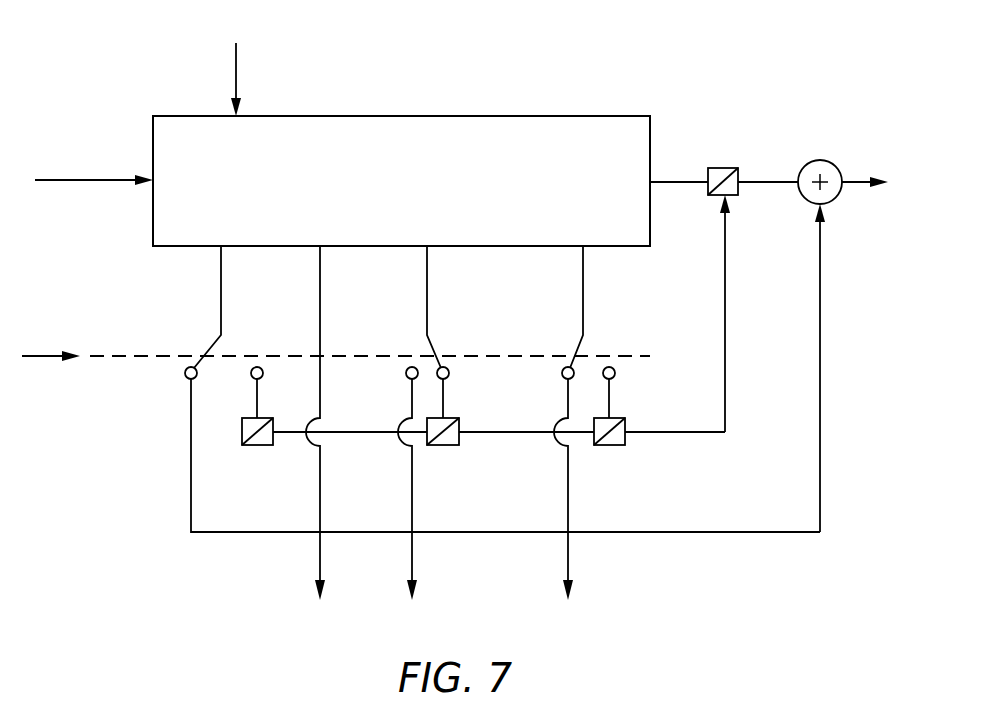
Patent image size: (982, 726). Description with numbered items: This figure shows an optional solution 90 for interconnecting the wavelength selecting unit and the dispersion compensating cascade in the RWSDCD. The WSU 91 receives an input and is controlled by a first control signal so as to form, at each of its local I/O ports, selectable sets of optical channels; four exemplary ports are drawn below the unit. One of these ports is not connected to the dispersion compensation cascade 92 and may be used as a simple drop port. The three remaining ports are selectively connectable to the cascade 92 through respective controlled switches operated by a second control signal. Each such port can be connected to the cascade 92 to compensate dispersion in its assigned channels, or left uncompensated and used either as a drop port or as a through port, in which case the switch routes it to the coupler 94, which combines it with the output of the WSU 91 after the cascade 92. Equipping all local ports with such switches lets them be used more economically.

The optional solution 90 is at (153, 88).
The WSU 91 is at (402, 181).
The dispersion compensation cascade 92 is at (222, 442).
The coupler 94 is at (824, 168).